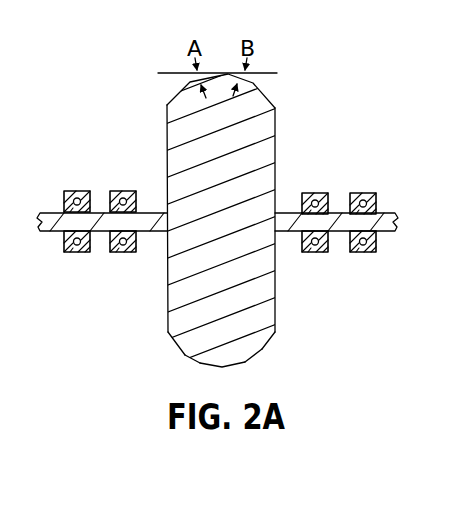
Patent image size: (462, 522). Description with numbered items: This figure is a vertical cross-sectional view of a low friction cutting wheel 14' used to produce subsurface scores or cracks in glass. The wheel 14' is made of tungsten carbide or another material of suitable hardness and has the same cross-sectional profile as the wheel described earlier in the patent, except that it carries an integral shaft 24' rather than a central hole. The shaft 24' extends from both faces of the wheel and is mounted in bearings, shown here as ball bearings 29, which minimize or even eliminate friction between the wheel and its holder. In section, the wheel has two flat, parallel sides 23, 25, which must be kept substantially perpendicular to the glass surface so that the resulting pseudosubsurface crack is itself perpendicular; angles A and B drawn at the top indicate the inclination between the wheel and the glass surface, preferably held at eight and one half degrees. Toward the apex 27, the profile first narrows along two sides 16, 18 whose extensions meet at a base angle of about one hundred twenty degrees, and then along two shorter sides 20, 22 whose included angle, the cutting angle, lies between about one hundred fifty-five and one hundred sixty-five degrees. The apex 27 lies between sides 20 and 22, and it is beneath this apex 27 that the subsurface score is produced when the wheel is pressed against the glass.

The wheel 14' is at (191, 210).
The side 23 is at (165, 145).
The side 25 is at (276, 137).
The side 16 is at (176, 343).
The side 18 is at (268, 342).
The side 20 is at (197, 364).
The side 22 is at (242, 363).
The apex 27 is at (221, 368).
The integral shaft 24' is at (221, 251).
The ball bearings 29 is at (76, 253).